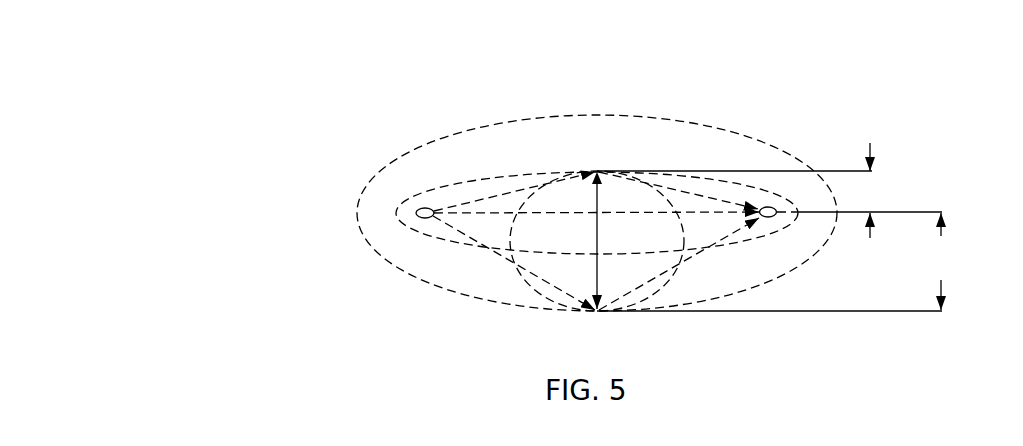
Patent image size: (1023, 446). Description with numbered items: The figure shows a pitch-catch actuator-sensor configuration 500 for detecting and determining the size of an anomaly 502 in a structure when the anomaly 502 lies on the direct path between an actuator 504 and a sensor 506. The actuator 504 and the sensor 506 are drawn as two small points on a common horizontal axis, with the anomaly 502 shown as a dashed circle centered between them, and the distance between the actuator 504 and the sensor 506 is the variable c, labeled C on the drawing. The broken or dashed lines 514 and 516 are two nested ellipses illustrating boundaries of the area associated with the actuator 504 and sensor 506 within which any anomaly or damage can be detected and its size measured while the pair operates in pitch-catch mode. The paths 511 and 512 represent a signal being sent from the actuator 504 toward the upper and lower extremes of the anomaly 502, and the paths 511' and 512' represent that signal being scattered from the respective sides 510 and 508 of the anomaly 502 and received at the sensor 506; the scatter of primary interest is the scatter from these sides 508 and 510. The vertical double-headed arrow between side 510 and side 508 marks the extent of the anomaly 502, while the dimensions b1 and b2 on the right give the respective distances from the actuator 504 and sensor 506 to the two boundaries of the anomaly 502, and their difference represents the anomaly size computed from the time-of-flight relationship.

The pitch-catch actuator-sensor configuration 500 is at (357, 128).
The anomaly 502 is at (513, 268).
The actuator 504 is at (427, 207).
The sensor 506 is at (768, 218).
The side of the anomaly 508 is at (596, 314).
The side of the anomaly 510 is at (597, 171).
The path 511 is at (514, 174).
The path 511' is at (678, 172).
The path 512 is at (514, 280).
The path 512' is at (679, 280).
The dashed line 514 is at (607, 115).
The dashed line 516 is at (423, 235).
The distance between actuator and sensor C is at (626, 228).
The distance to first anomaly boundary b1 is at (871, 190).
The distance to second anomaly boundary b2 is at (939, 261).